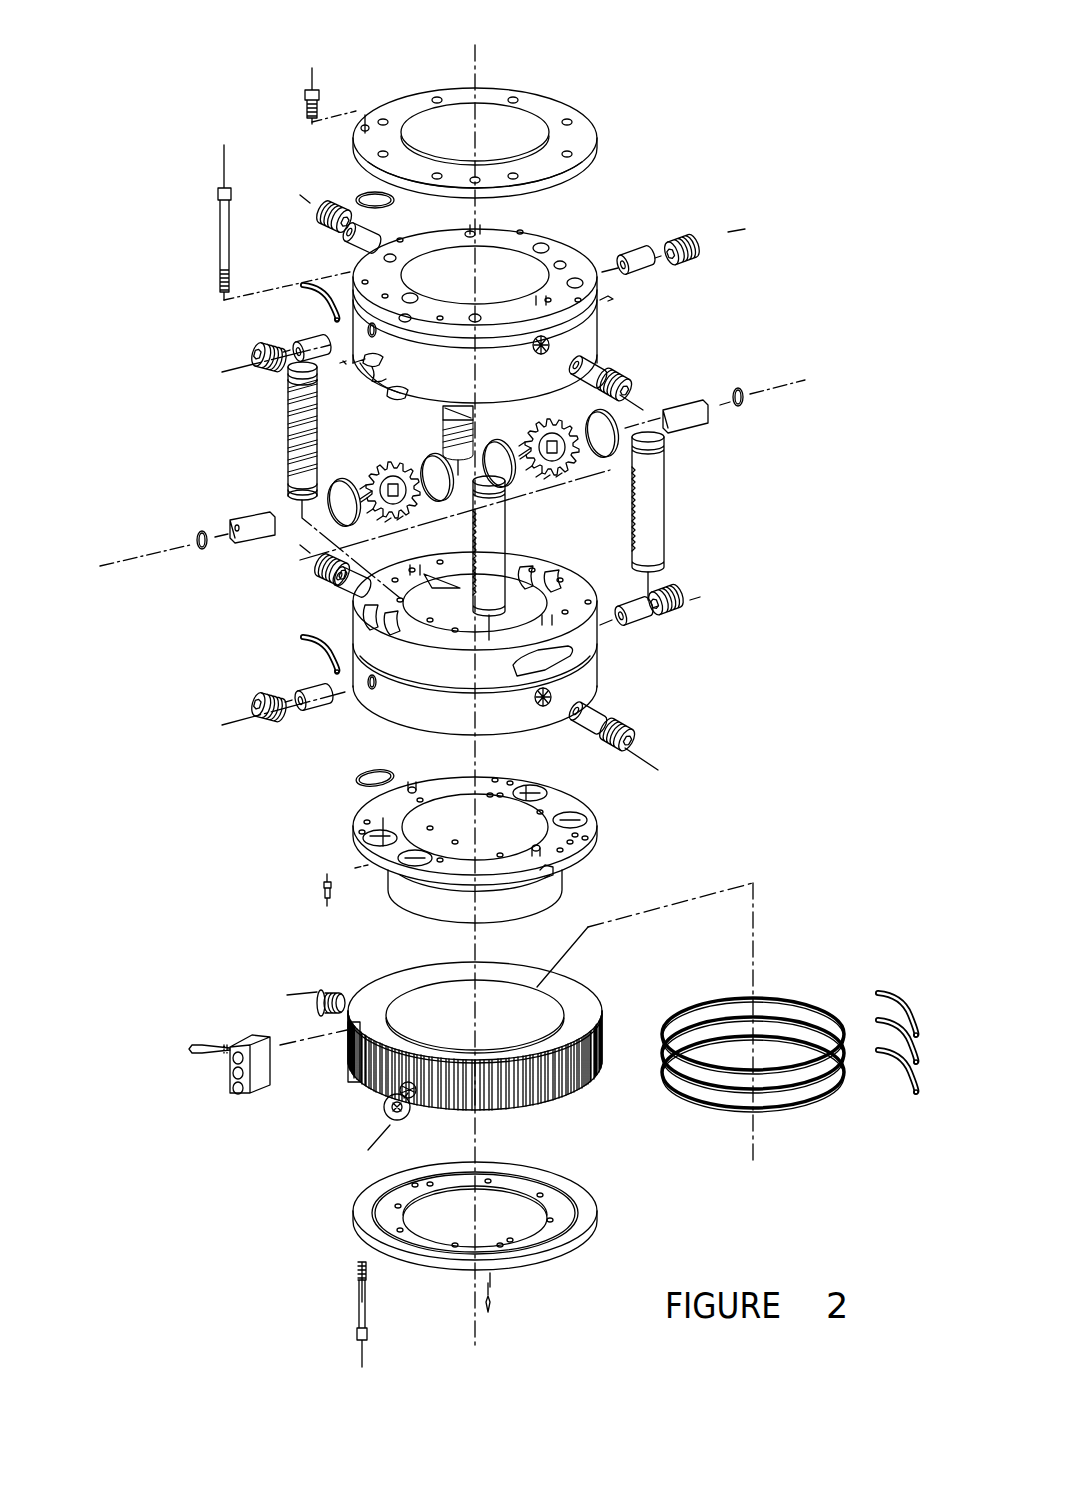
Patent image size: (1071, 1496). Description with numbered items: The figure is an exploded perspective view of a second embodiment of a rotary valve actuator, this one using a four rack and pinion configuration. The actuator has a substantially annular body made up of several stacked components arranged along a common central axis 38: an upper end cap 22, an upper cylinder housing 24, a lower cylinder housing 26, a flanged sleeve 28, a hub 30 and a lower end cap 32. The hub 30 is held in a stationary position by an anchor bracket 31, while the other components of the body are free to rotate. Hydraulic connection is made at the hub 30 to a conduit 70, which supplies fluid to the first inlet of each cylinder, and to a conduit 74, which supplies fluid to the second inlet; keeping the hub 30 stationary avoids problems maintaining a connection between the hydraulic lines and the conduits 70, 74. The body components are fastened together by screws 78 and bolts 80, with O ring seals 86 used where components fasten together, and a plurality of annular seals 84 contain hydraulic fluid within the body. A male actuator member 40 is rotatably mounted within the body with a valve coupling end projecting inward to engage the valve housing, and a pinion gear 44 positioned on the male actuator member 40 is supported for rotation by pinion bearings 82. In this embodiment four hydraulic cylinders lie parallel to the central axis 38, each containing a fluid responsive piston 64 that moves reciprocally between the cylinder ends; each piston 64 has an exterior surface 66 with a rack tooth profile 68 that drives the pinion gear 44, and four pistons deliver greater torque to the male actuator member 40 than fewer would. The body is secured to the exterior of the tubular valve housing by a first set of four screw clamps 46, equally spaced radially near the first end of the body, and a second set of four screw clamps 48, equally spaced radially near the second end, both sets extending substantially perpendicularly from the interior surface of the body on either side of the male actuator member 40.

The upper end cap 22 is at (575, 103).
The upper cylinder housing 24 is at (600, 334).
The lower cylinder housing 26 is at (600, 680).
The flanged sleeve 28 is at (598, 836).
The hub 30 is at (590, 985).
The anchor bracket 31 is at (245, 1035).
The lower end cap 32 is at (592, 1180).
The central axis 38 is at (480, 58).
The male actuator member 40 is at (230, 520).
The pinion gear 44 is at (398, 512).
The first set of four screw clamps 46 is at (348, 240).
The second set of four screw clamps 48 is at (338, 586).
The fluid responsive piston 64 is at (288, 383).
The exterior surface 66 is at (290, 486).
The rack tooth profile 68 is at (292, 435).
The conduit 70 is at (318, 988).
The conduit 74 is at (385, 1100).
The screws 78 is at (308, 82).
The bolts 80 is at (217, 230).
The pinion bearings 82 is at (432, 469).
The annular seals 84 is at (793, 974).
The O ring seals 86 is at (360, 195).